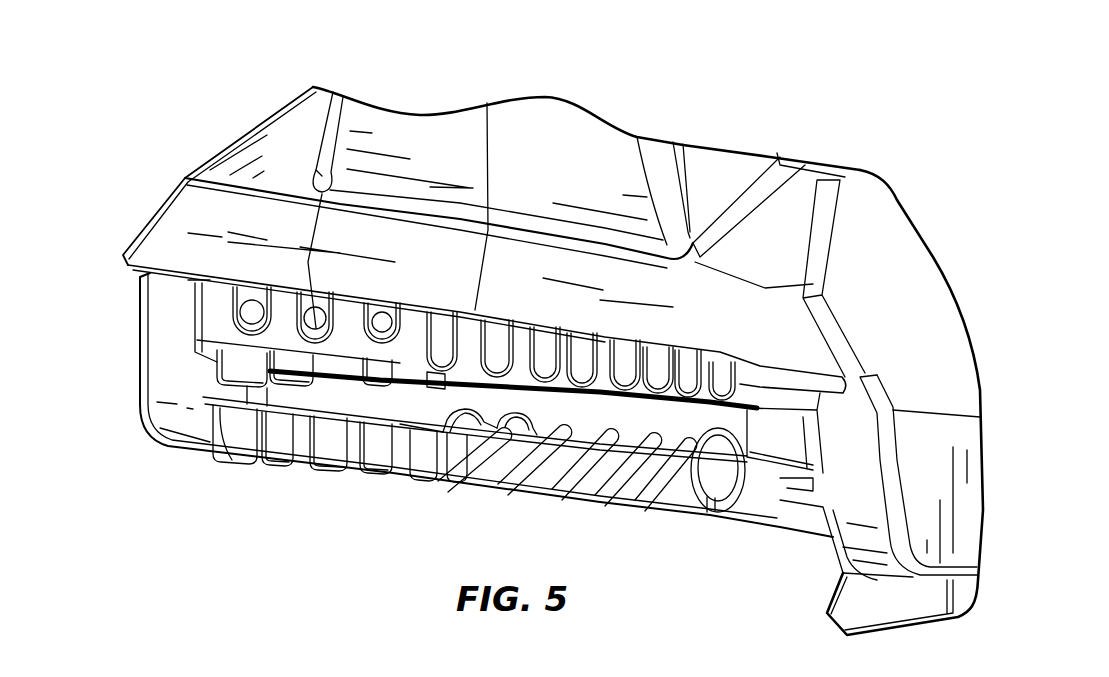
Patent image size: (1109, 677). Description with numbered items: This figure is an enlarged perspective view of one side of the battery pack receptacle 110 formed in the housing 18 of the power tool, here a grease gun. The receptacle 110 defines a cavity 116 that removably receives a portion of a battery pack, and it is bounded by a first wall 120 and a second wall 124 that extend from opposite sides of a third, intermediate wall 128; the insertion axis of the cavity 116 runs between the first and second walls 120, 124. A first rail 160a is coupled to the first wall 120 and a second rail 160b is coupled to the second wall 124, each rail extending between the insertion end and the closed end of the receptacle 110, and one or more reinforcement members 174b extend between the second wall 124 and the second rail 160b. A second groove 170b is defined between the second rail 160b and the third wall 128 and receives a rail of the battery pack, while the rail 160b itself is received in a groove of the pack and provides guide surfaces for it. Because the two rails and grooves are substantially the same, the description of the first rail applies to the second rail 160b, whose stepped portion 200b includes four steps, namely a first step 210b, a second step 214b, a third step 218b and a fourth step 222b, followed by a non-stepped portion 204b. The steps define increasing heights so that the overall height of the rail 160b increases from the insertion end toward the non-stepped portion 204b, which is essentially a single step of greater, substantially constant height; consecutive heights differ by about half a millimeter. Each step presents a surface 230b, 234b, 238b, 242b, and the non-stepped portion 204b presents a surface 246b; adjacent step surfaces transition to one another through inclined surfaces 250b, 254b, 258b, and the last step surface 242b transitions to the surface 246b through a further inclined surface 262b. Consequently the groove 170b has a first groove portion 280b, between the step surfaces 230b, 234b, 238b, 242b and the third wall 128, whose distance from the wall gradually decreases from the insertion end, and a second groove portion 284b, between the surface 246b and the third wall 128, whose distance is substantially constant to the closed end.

The housing 18 is at (855, 210).
The battery pack receptacle 110 is at (797, 347).
The cavity 116 is at (481, 508).
The first wall 120 is at (823, 437).
The second wall 124 is at (207, 315).
The third intermediate wall 128 is at (533, 305).
The first rail 160a is at (797, 497).
The second rail 160b is at (493, 397).
The second groove 170b is at (748, 394).
The reinforcement member 174b is at (633, 473).
The stepped portion 200b is at (440, 416).
The non-stepped portion 204b is at (700, 340).
The first step 210b is at (250, 431).
The surface of first step 230b is at (210, 367).
The second step 214b is at (213, 463).
The surface of second step 234b is at (258, 352).
The third step 218b is at (272, 454).
The surface of third step 238b is at (295, 366).
The fourth step 222b is at (345, 477).
The surface of fourth step 242b is at (375, 362).
The surface of non-stepped portion 246b is at (687, 232).
The inclined surface 250b is at (200, 342).
The inclined surface 254b is at (252, 305).
The inclined surface 258b is at (300, 318).
The inclined surface 262b is at (413, 300).
The first groove portion 280b is at (285, 322).
The second groove portion 284b is at (578, 362).